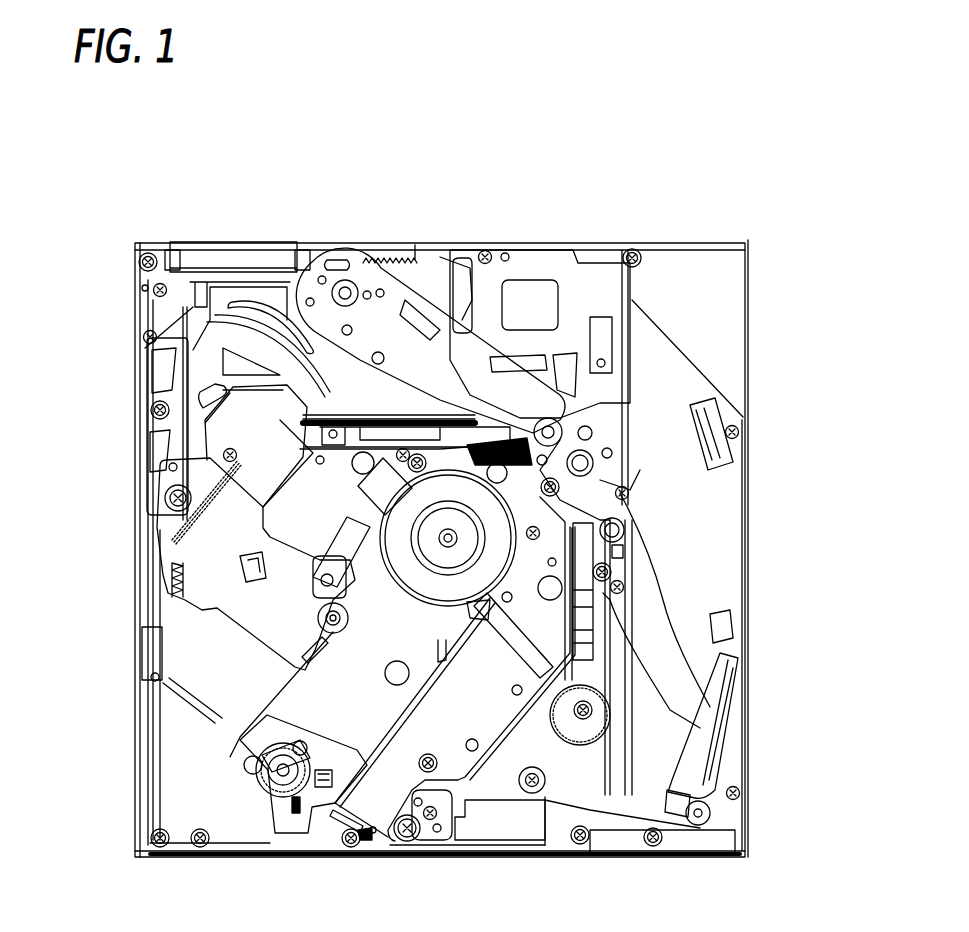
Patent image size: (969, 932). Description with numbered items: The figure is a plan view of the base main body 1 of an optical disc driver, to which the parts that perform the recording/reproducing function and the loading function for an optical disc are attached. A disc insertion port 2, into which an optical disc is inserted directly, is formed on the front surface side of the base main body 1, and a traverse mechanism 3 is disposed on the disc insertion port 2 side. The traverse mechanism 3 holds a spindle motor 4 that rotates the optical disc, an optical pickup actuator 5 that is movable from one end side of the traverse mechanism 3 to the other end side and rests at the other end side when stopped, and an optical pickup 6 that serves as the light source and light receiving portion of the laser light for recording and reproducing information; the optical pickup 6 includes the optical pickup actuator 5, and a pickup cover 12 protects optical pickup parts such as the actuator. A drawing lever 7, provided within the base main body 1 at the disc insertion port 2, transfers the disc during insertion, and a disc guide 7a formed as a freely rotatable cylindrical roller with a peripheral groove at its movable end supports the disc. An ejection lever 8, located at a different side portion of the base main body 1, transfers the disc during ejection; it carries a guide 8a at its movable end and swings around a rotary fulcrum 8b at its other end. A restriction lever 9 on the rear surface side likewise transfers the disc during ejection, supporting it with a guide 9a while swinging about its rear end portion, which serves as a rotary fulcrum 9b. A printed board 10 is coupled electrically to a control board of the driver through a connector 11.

The base main body 1 is at (213, 860).
The disc insertion port 2 is at (443, 850).
The traverse mechanism 3 is at (463, 680).
The spindle motor 4 is at (450, 536).
The optical pickup actuator 5 is at (277, 840).
The optical pickup 6 is at (357, 847).
The drawing lever 7 is at (700, 727).
The disc guide 7a is at (703, 813).
The ejection lever 8 is at (220, 567).
The guide 8a is at (323, 620).
The rotary fulcrum 8b is at (167, 507).
The restriction lever 9 is at (403, 325).
The guide 9a is at (546, 425).
The rotary fulcrum 9b is at (344, 290).
The printed board 10 is at (528, 306).
The connector 11 is at (222, 253).
The pickup cover 12 is at (338, 805).